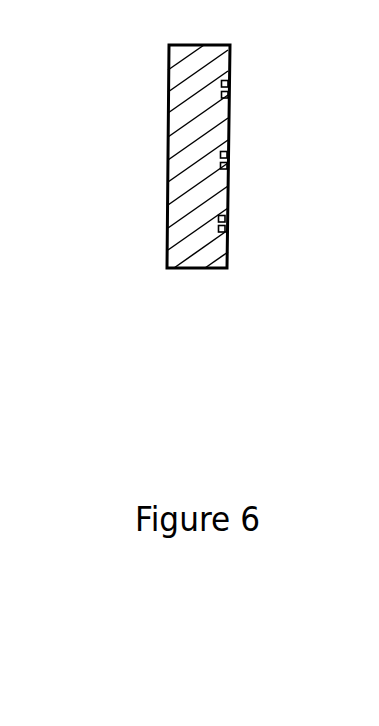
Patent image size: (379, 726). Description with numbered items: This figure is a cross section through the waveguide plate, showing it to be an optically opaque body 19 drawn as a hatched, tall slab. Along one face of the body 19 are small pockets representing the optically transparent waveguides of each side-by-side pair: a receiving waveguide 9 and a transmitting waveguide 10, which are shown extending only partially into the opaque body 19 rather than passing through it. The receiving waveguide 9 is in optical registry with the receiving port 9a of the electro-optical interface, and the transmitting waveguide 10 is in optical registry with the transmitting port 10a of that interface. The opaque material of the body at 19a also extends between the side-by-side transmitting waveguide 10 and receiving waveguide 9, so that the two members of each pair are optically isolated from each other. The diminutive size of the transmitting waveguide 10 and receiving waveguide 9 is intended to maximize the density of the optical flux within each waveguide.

The receiving waveguide 9 is at (232, 83).
The transmitting waveguide 10 is at (232, 95).
The receiving port 9a is at (222, 155).
The transmitting port 10a is at (222, 161).
The optically opaque body 19 is at (168, 243).
The optically opaque body portion between waveguides 19a is at (232, 128).